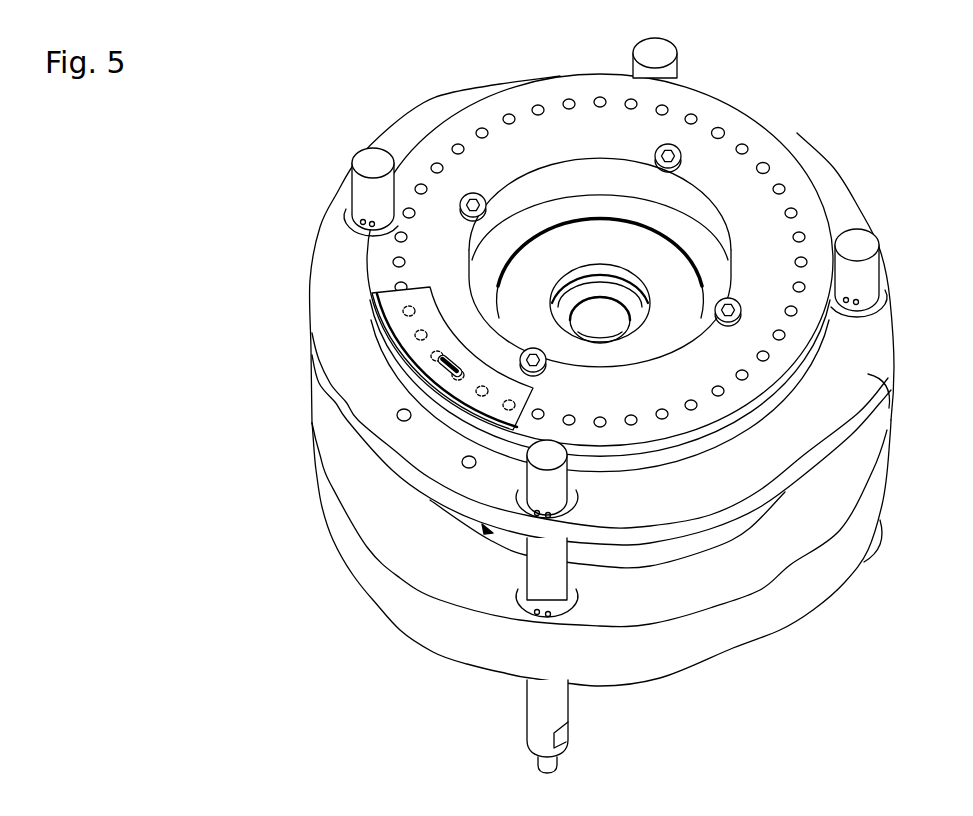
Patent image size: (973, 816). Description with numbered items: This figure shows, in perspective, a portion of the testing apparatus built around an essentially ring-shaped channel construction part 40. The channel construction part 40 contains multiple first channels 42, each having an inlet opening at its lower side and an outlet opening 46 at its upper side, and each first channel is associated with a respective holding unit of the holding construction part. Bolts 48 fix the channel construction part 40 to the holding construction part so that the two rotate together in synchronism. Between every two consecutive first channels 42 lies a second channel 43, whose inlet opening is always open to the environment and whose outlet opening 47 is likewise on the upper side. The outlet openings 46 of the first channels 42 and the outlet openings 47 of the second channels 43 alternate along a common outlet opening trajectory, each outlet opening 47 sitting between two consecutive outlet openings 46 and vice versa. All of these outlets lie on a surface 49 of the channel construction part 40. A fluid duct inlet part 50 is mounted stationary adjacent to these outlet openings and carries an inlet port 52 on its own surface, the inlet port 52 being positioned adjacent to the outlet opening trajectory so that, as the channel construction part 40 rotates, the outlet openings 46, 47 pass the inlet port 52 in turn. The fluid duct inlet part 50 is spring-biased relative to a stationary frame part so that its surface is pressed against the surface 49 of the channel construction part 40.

The channel construction part 40 is at (707, 443).
The first channels 42 is at (722, 128).
The second channels 43 is at (697, 113).
The outlet opening 46 is at (482, 127).
The outlet opening 47 is at (510, 113).
The bolts 48 is at (745, 314).
The surface 49 is at (377, 240).
The fluid duct inlet part 50 is at (388, 308).
The inlet port 52 is at (438, 362).